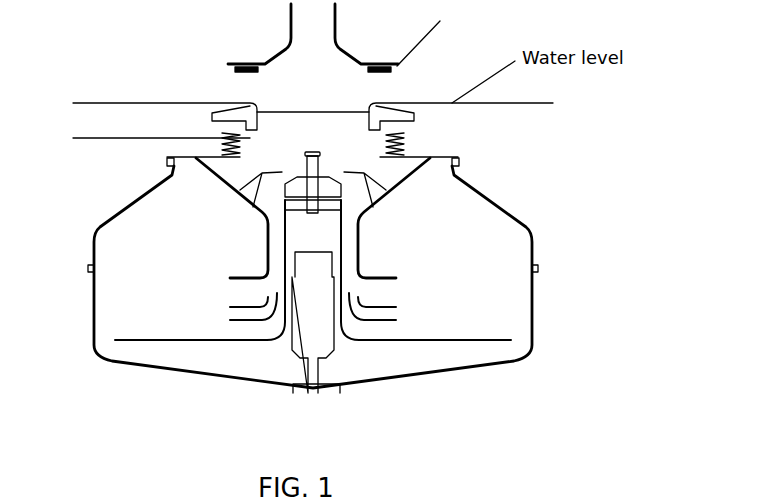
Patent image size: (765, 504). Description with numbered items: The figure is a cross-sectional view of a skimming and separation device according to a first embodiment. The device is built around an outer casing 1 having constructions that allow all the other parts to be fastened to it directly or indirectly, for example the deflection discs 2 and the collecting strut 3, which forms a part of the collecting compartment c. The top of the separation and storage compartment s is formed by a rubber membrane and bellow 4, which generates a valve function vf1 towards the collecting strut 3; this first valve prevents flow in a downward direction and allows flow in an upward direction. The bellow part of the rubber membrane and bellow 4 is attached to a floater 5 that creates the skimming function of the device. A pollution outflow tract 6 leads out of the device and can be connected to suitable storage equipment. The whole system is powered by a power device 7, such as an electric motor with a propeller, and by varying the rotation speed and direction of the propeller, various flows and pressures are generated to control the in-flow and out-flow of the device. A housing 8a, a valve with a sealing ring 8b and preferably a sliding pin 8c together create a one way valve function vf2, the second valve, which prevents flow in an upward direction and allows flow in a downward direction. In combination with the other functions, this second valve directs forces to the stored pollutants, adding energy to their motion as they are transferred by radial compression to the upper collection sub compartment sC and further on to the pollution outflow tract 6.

The pollution outflow tract 6 is at (285, 36).
The floater 5 is at (212, 121).
The rubber membrane and bellow 4 is at (167, 157).
The valve function vf1 is at (167, 160).
The outer casing 1 is at (538, 292).
The collecting strut 3 is at (385, 170).
The housing 8a is at (280, 173).
The valve with a sealing ring 8b is at (313, 189).
The sliding pin 8c is at (280, 180).
The one way valve function vf2 is at (282, 193).
The separation and storage compartment s is at (130, 290).
The upper collection sub compartment sC is at (337, 138).
The collecting compartment c is at (347, 250).
The deflection discs 2 is at (340, 345).
The power device 7 is at (308, 330).